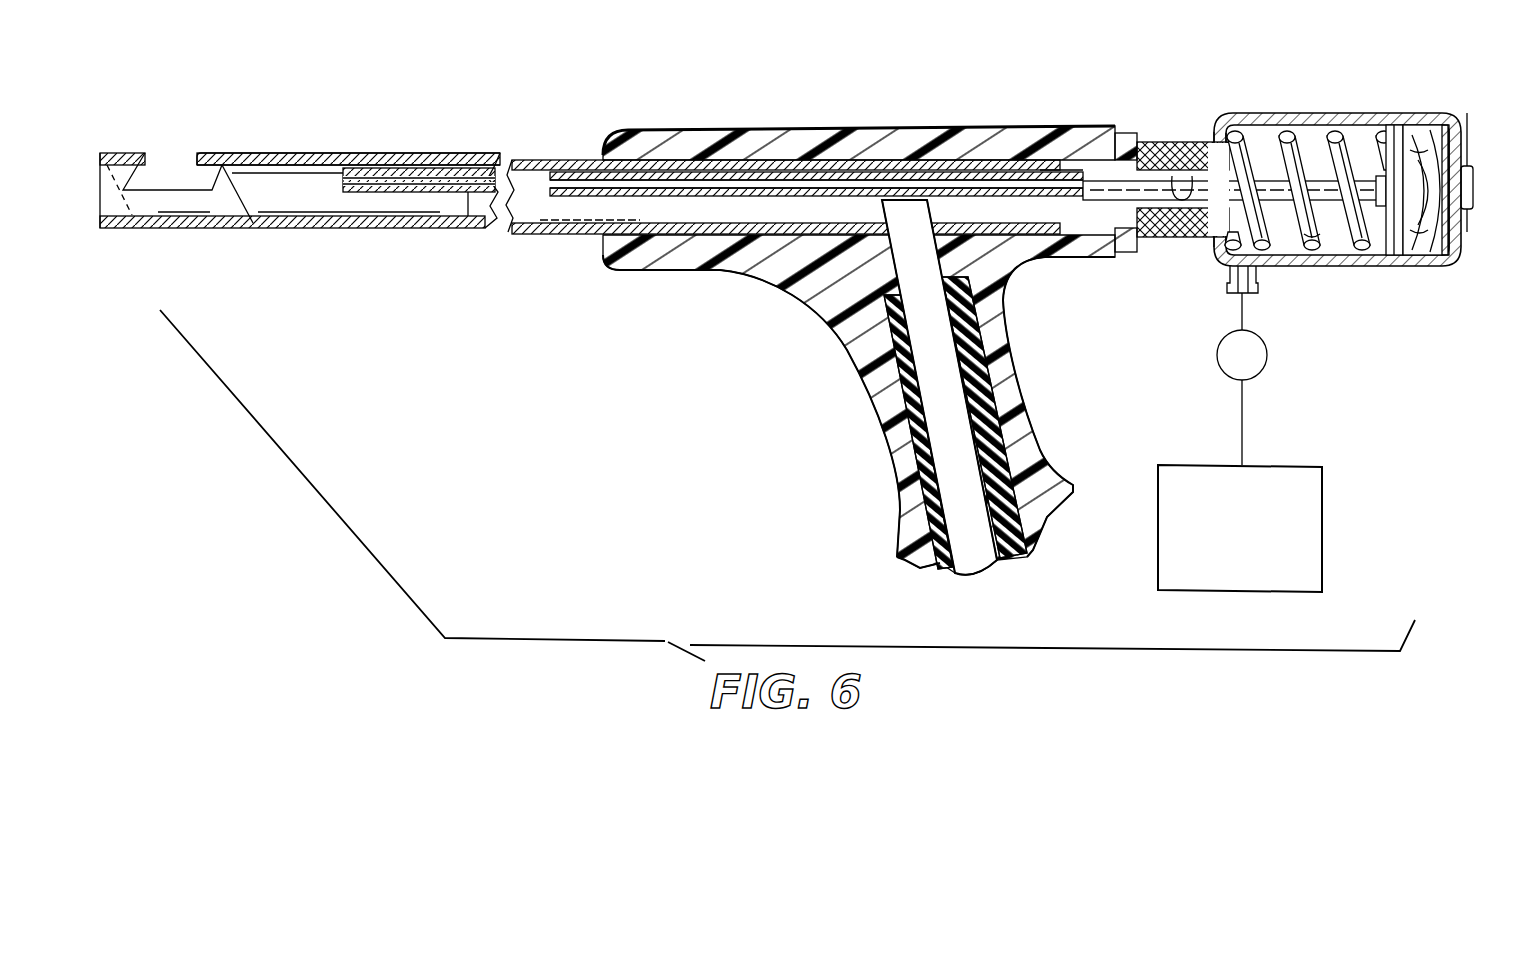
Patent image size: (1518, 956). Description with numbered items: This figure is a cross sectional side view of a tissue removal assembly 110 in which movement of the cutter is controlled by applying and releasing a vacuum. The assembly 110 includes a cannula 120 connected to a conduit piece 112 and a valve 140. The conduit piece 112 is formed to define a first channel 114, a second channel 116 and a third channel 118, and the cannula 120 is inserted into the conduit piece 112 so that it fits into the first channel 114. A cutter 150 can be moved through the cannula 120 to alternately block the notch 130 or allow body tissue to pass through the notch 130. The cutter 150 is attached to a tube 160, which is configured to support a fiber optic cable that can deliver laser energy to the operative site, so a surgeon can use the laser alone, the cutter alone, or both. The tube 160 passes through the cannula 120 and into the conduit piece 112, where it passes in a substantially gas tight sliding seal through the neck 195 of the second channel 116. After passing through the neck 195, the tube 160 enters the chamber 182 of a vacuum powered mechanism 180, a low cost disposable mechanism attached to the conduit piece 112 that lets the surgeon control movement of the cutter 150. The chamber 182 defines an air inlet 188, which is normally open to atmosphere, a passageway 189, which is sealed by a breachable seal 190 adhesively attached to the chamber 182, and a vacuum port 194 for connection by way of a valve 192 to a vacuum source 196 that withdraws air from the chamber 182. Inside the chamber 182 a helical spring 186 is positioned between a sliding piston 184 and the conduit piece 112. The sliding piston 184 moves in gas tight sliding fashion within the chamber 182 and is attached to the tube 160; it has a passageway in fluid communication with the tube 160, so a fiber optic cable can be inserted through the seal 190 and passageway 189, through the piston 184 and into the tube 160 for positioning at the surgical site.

The tissue removal assembly 110 is at (938, 325).
The conduit piece 112 is at (915, 123).
The first channel 114 is at (690, 228).
The second channel 116 is at (1183, 178).
The third channel 118 is at (931, 222).
The cannula 120 is at (370, 147).
The notch 130 is at (300, 194).
The valve 140 is at (911, 412).
The cutter 150 is at (297, 230).
The tube 160 is at (490, 168).
The vacuum powered mechanism 180 is at (1347, 190).
The chamber 182 is at (1261, 146).
The sliding piston 184 is at (1412, 212).
The helical spring 186 is at (1314, 235).
The air inlet 188 is at (1447, 158).
The passageway 189 is at (1425, 220).
The breachable seal 190 is at (1465, 213).
The valve 192 is at (1258, 368).
The vacuum port 194 is at (1258, 282).
The neck 195 is at (1064, 164).
The vacuum source 196 is at (1322, 515).